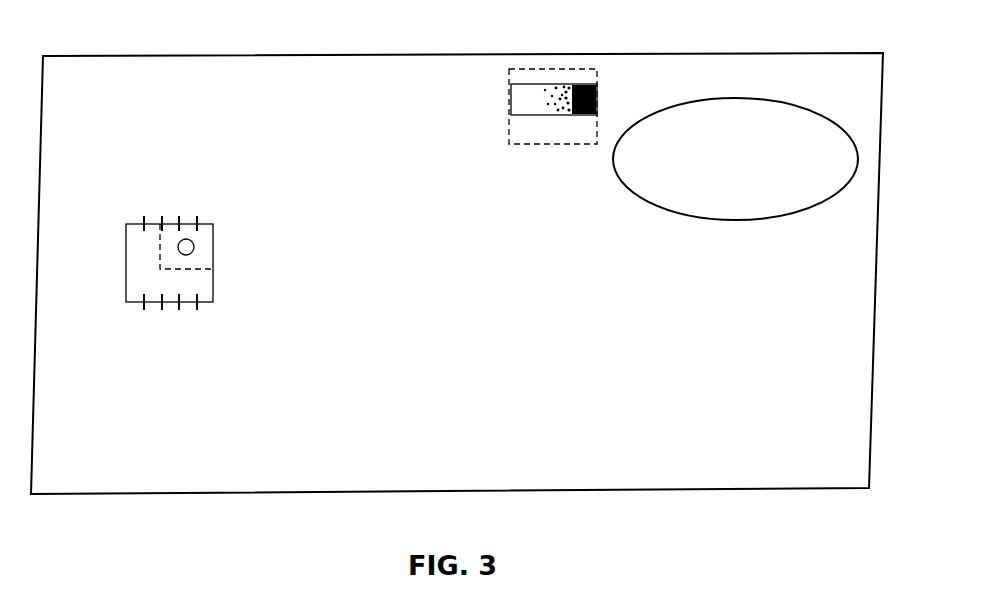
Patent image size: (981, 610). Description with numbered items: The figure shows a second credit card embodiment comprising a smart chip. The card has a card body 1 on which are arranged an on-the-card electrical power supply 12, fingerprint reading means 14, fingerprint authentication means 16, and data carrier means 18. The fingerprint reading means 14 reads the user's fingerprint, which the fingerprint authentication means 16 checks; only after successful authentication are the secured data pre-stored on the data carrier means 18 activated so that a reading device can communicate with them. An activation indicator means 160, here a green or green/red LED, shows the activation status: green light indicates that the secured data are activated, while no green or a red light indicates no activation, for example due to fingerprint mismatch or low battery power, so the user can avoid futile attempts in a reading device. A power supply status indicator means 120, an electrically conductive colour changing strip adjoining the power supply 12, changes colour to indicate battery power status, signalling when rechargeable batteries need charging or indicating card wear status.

The card body 1 is at (177, 479).
The on-the-card electrical power supply 12 is at (548, 133).
The power supply status indicator means 120 is at (521, 98).
The fingerprint reading means 14 is at (652, 191).
The fingerprint authentication means 16 is at (213, 229).
The activation indicator means 160 is at (194, 247).
The data carrier means 18 is at (137, 282).